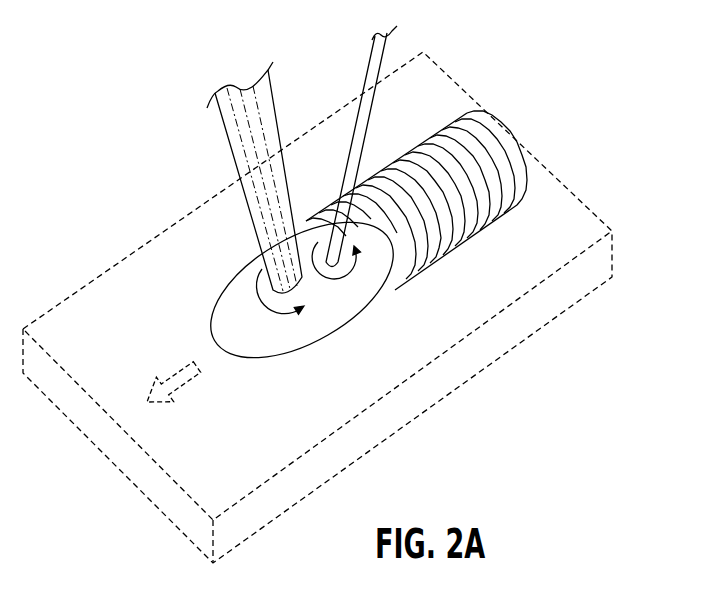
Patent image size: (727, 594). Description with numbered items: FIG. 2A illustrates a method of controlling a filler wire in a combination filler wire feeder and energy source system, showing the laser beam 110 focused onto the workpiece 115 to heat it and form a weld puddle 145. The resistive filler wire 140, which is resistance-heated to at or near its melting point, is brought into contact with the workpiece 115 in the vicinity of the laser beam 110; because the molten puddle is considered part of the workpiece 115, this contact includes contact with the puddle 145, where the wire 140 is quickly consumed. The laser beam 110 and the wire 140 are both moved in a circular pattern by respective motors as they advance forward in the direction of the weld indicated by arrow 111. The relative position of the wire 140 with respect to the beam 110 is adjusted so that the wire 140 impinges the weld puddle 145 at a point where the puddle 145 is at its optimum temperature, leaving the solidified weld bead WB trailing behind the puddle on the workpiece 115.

The laser beam 110 is at (278, 120).
The arrow 111 is at (187, 380).
The workpiece 115 is at (566, 224).
The filler wire 140 is at (388, 53).
The weld puddle 145 is at (248, 300).
The weld bead WB is at (492, 148).